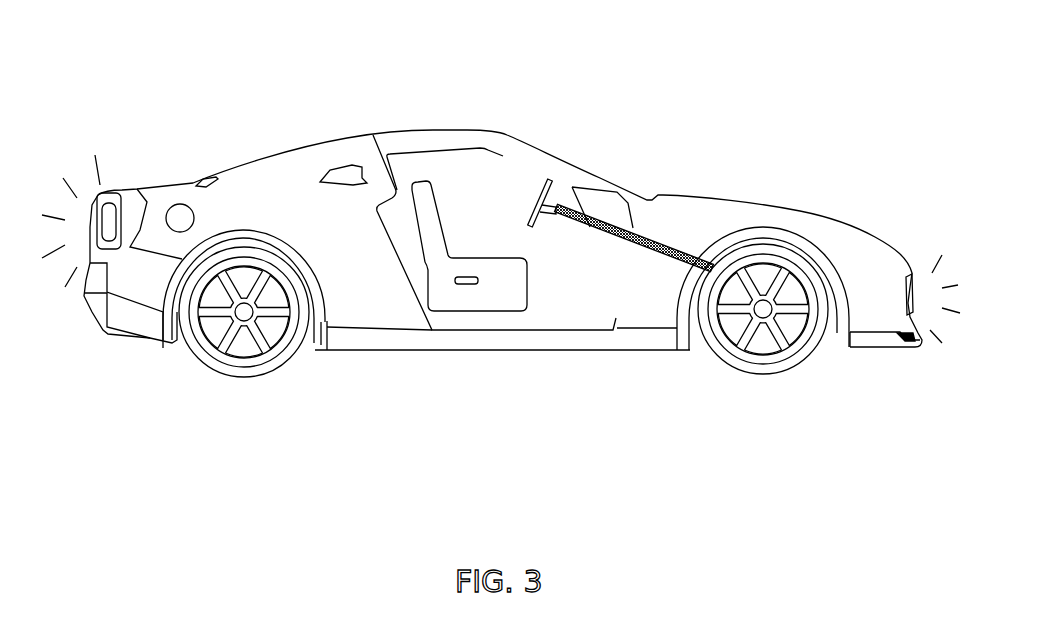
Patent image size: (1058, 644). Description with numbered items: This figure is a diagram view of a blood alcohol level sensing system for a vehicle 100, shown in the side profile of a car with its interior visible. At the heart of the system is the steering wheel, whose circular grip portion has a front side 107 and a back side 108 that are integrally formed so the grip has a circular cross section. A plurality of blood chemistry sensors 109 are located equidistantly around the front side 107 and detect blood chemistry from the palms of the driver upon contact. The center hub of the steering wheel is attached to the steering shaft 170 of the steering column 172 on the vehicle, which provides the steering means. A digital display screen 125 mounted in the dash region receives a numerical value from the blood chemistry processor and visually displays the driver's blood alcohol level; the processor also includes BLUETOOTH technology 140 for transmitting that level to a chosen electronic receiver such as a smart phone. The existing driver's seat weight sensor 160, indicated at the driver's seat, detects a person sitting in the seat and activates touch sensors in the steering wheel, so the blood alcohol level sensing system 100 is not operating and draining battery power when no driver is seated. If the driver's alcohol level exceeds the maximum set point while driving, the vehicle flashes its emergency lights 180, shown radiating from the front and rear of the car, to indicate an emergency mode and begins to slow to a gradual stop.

The blood alcohol level sensing system 100 is at (661, 88).
The BLUETOOTH technology 140 is at (696, 110).
The emergency lights 180 is at (100, 190).
The digital display screen 125 is at (561, 188).
The blood chemistry sensors 109 is at (544, 185).
The front side 107 is at (555, 214).
The back side 108 is at (537, 226).
The steering column 172 is at (642, 238).
The steering shaft 170 is at (668, 249).
The driver's seat weight sensor 160 is at (474, 296).